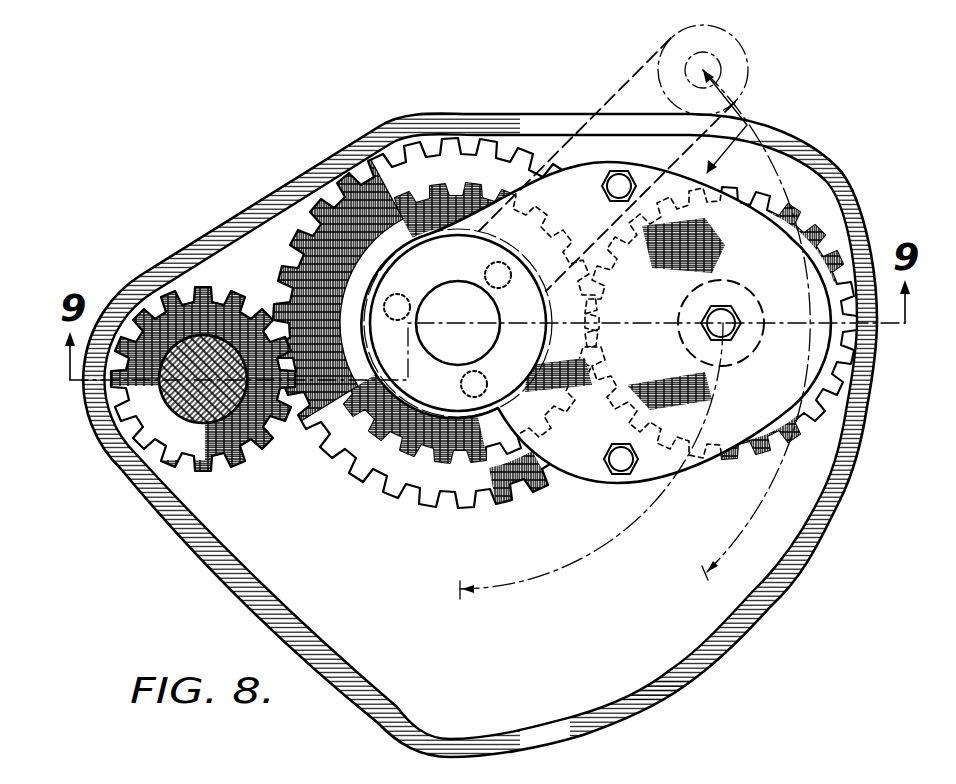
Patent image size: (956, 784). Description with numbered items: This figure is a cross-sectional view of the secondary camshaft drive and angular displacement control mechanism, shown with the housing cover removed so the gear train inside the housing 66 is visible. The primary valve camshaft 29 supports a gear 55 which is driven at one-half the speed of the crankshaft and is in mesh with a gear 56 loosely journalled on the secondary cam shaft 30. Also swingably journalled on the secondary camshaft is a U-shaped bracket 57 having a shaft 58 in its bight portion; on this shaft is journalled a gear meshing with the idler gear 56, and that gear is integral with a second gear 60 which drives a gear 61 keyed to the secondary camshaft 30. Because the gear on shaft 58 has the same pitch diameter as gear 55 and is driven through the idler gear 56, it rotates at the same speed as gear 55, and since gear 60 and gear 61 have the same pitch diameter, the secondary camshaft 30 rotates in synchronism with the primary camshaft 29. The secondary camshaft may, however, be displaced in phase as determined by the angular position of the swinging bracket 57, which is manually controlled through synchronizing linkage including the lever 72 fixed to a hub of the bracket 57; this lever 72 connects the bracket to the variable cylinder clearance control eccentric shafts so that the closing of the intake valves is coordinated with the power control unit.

The primary valve camshaft 29 is at (207, 352).
The secondary cam shaft 30 is at (461, 281).
The gear 55 is at (237, 466).
The gear 56 is at (335, 450).
The U-shaped bracket 57 is at (747, 125).
The shaft 58 is at (730, 278).
The gear 60 is at (843, 388).
The gear 61 is at (427, 467).
The housing 66 is at (778, 607).
The lever 72 is at (655, 52).